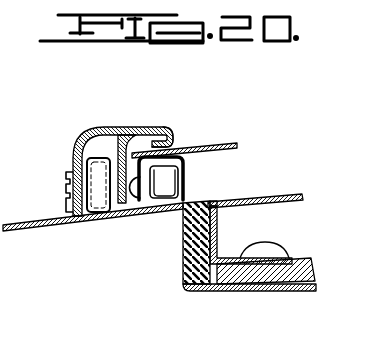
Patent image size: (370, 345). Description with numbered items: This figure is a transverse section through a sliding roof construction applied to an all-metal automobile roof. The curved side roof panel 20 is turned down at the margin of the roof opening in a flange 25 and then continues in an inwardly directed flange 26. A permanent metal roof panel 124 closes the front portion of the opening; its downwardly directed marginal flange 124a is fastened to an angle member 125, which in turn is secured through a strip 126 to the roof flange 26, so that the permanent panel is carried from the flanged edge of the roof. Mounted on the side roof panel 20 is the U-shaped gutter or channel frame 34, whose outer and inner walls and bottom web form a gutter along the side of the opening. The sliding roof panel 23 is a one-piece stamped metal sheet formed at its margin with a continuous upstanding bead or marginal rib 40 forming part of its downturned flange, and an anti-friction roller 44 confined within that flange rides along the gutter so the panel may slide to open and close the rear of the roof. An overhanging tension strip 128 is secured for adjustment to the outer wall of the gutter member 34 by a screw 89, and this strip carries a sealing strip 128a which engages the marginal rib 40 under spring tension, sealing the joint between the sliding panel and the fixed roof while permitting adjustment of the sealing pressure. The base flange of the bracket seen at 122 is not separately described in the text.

The side roof panel 20 is at (46, 222).
The sliding roof panel 23 is at (212, 147).
The downward flange 25 is at (184, 249).
The inwardly directed flange 26 is at (224, 291).
The channel frame 34 is at (78, 214).
The marginal rib 40 is at (135, 128).
The anti-friction roller 44 is at (165, 196).
The screw 89 is at (69, 176).
The base flange 122 is at (195, 290).
The permanent metal roof panel 124 is at (296, 200).
The marginal flange 124a is at (212, 205).
The angle member 125 is at (226, 226).
The strip 126 is at (270, 288).
The tension strip 128 is at (79, 144).
The sealing strip 128a is at (163, 127).